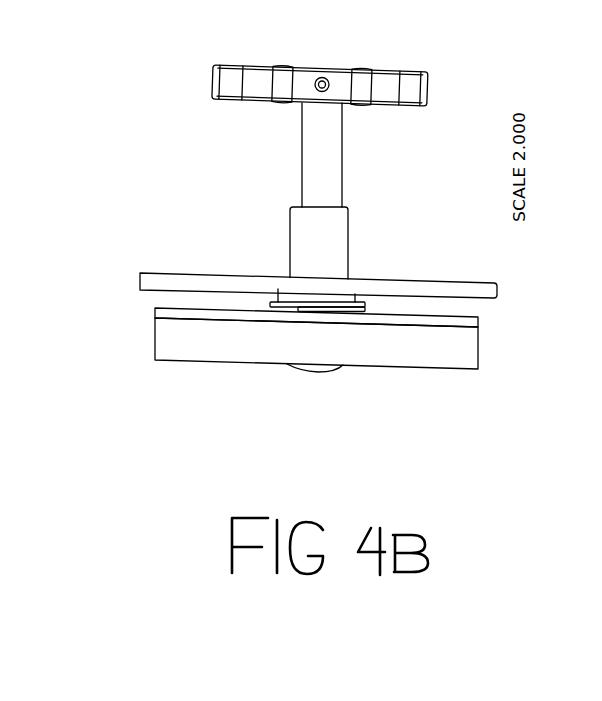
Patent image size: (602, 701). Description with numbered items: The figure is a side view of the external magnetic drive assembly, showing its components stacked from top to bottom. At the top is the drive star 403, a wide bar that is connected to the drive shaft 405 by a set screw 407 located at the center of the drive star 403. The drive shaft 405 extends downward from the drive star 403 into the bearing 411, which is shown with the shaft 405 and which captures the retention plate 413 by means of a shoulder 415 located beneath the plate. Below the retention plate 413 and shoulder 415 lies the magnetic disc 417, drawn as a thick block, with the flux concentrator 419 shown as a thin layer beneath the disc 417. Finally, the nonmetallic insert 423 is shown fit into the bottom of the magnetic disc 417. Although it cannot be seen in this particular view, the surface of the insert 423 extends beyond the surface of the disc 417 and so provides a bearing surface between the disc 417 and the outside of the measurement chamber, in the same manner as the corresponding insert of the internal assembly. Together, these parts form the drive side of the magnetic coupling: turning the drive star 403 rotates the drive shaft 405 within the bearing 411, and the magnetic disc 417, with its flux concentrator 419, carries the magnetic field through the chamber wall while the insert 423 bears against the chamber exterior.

The drive star 403 is at (413, 84).
The drive shaft 405 is at (322, 157).
The set screw 407 is at (326, 77).
The bearing 411 is at (333, 228).
The retention plate 413 is at (490, 292).
The shoulder 415 is at (368, 300).
The magnetic disc 417 is at (475, 365).
The flux concentrator 419 is at (477, 322).
The nonmetallic insert 423 is at (318, 372).